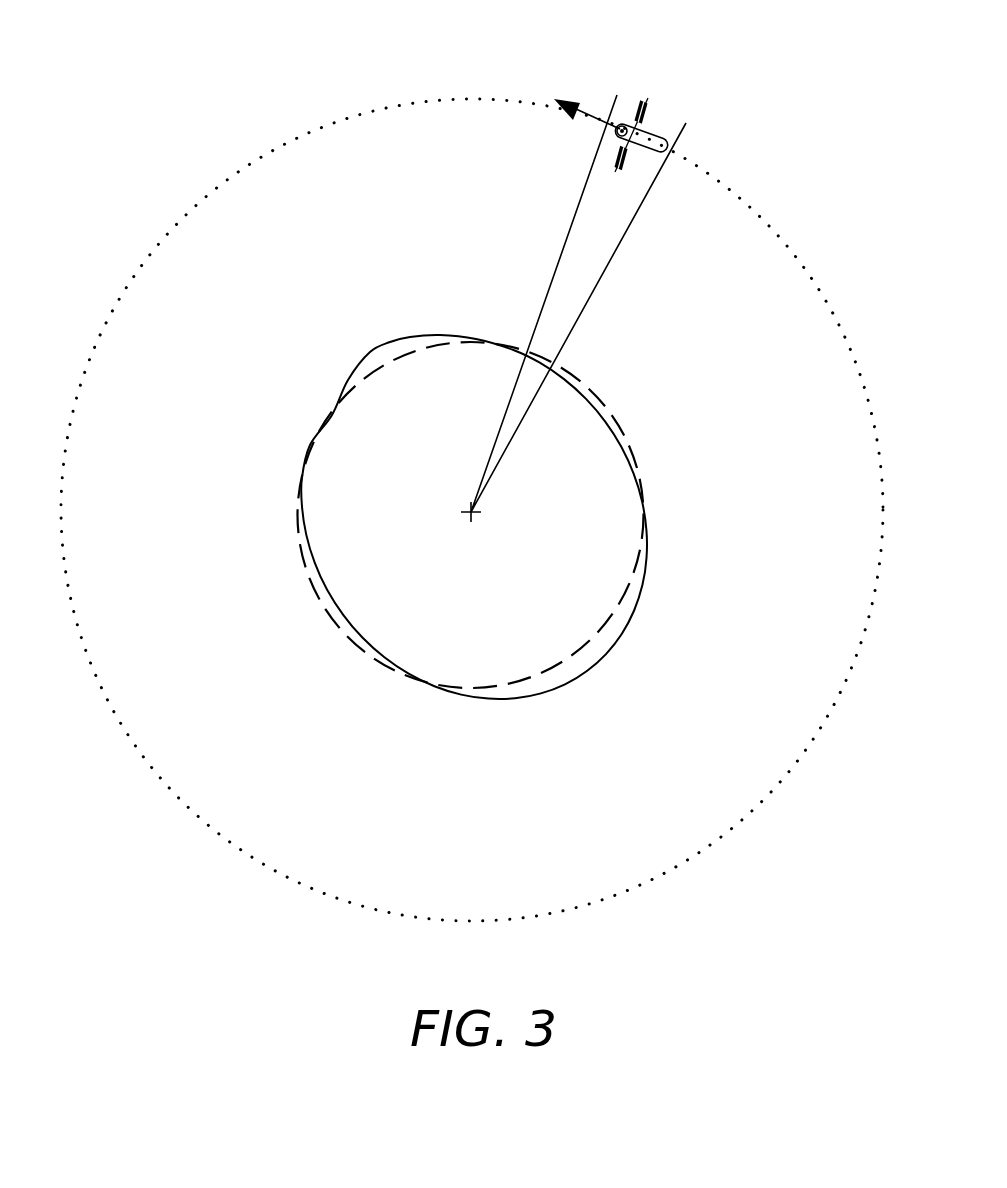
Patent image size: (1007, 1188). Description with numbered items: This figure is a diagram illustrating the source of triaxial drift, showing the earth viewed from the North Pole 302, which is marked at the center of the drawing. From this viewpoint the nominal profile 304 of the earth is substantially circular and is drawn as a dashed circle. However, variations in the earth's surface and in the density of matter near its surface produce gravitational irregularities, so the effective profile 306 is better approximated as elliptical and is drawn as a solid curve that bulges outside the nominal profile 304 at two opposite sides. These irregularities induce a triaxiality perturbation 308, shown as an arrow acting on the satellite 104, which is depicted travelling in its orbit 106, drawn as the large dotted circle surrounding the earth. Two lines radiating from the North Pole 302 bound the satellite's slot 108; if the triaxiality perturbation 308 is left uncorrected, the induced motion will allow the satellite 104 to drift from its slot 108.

The satellite 104 is at (647, 98).
The orbit 106 is at (747, 203).
The slot 108 is at (648, 297).
The North Pole 302 is at (476, 509).
The nominal profile 304 is at (402, 360).
The effective profile 306 is at (373, 352).
The triaxiality perturbation 308 is at (568, 108).